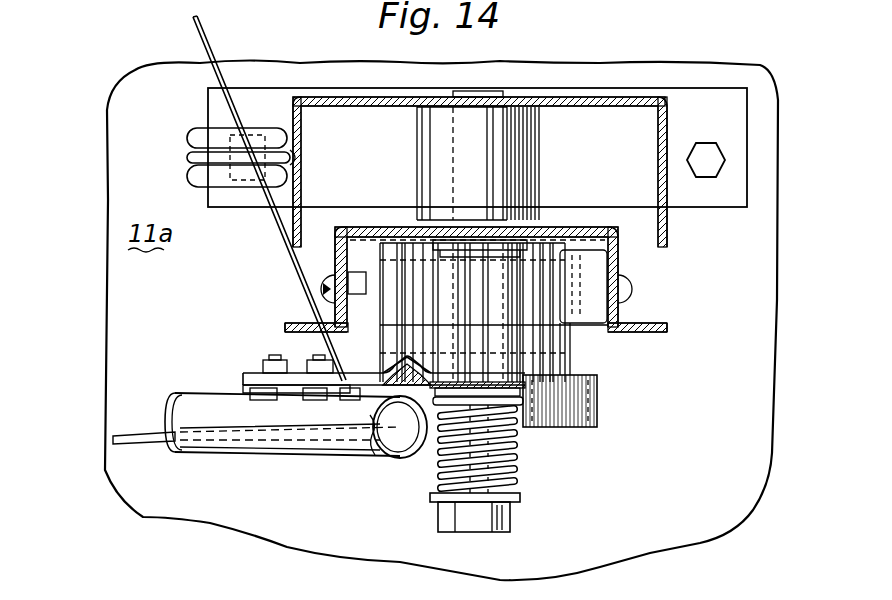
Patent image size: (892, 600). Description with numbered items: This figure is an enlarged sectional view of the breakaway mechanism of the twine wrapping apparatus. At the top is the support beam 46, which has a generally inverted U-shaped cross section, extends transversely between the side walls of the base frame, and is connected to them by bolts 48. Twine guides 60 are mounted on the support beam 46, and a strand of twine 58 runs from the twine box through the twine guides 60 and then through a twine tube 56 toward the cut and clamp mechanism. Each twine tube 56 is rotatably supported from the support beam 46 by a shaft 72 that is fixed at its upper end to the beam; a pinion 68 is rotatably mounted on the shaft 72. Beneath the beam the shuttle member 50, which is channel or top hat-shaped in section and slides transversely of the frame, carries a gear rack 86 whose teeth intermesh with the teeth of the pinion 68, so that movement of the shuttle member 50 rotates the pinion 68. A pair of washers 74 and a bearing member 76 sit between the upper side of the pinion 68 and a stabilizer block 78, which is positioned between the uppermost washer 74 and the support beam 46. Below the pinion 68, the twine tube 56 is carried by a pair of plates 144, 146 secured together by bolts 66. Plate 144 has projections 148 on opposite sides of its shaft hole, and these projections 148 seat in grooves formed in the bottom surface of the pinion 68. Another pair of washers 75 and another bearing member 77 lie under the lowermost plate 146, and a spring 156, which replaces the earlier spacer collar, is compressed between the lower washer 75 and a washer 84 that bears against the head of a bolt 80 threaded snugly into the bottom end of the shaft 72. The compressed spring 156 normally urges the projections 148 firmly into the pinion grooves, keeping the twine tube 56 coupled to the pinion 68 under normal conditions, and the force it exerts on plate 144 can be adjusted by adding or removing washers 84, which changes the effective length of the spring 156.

The support beam 46 is at (667, 142).
The bolts 48 is at (706, 180).
The shuttle member 50 is at (648, 325).
The twine tubes 56 is at (330, 456).
The twine 58 is at (272, 262).
The twine guides 60 is at (248, 128).
The bolts 66 is at (315, 360).
The pinions 68 is at (597, 355).
The shafts 72 is at (448, 135).
The washers 74 is at (495, 243).
The washers 75 is at (525, 378).
The bearing member 76 is at (408, 198).
The bearing member 77 is at (445, 405).
The stabilizer block 78 is at (540, 163).
The bolt 80 is at (512, 520).
The washer 84 is at (521, 497).
The gear racks 86 is at (590, 318).
The plate 144 is at (245, 374).
The plate 146 is at (245, 387).
The projections 148 is at (388, 366).
The spring 156 is at (515, 447).